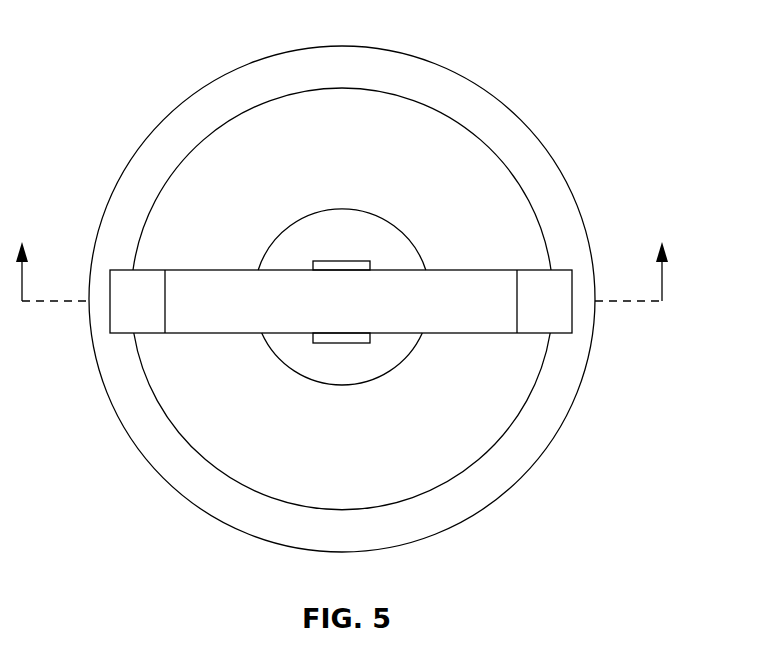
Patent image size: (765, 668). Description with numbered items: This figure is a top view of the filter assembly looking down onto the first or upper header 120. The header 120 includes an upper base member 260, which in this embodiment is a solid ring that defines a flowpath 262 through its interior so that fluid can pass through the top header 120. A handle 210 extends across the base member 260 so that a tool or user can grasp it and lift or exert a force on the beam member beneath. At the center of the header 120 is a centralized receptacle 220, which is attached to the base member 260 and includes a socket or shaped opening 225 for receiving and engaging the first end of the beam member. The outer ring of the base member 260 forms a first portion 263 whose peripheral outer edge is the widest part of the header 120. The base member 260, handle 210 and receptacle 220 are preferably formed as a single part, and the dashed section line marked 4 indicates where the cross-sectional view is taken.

The first header 120 is at (145, 54).
The handle 210 is at (208, 292).
The centralized receptacle 220 is at (382, 353).
The opening 225 is at (340, 338).
The upper base member 260 is at (528, 122).
The flowpath 262 is at (332, 434).
The first portion 263 is at (137, 448).
The section line 4- 4 is at (341, 256).